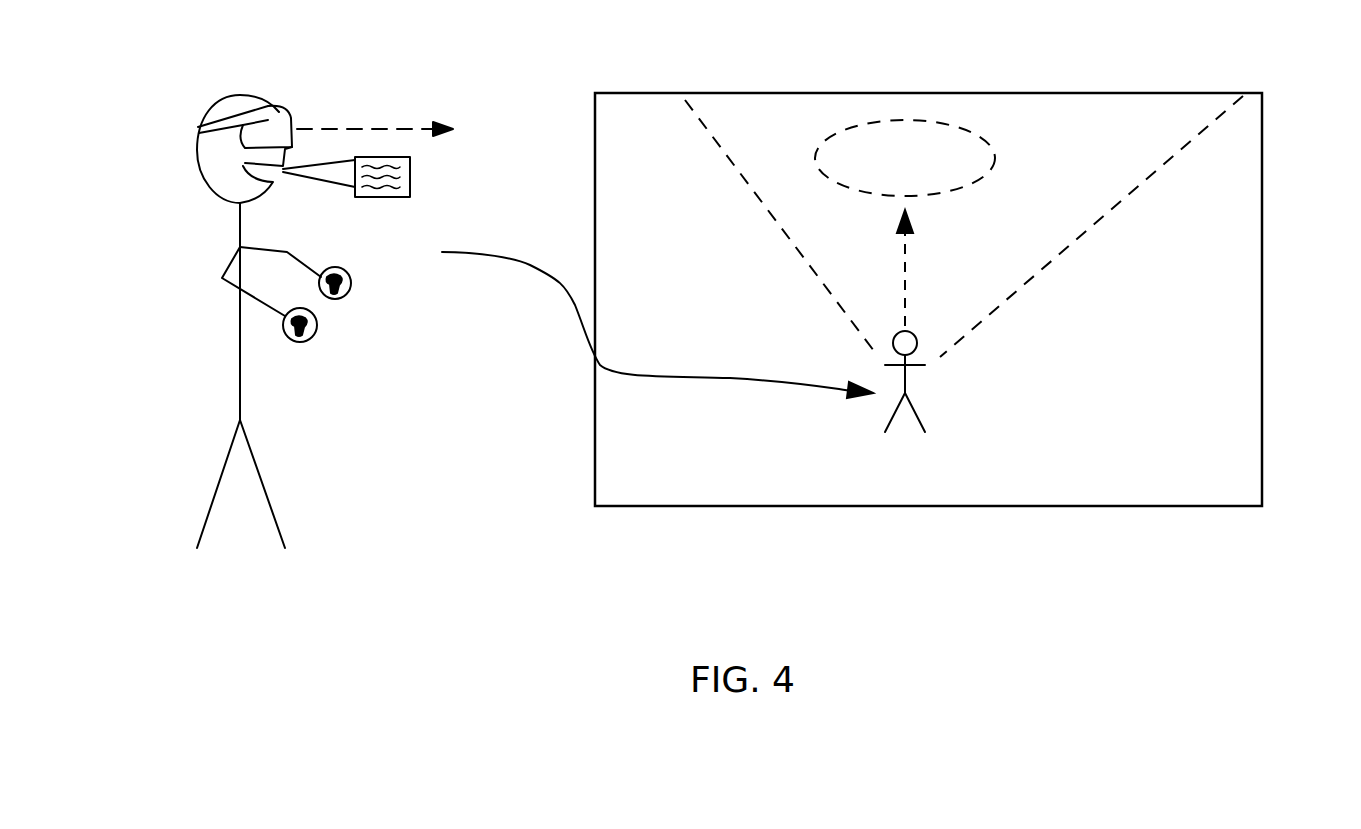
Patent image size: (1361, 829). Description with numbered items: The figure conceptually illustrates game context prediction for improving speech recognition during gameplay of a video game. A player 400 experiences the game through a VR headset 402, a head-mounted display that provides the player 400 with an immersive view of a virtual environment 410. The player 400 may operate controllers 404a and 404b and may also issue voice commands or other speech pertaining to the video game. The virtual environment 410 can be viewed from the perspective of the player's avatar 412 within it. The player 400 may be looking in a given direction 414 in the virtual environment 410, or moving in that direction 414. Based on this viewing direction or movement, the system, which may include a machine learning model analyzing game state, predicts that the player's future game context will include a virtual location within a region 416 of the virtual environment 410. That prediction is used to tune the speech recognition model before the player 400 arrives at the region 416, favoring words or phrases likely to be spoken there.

The player 400 is at (200, 175).
The VR headset 402 is at (289, 121).
The controller 404a is at (352, 281).
The controller 404b is at (317, 331).
The virtual environment 410 is at (1263, 203).
The avatar 412 is at (908, 380).
The direction 414 is at (903, 290).
The region 416 is at (925, 170).